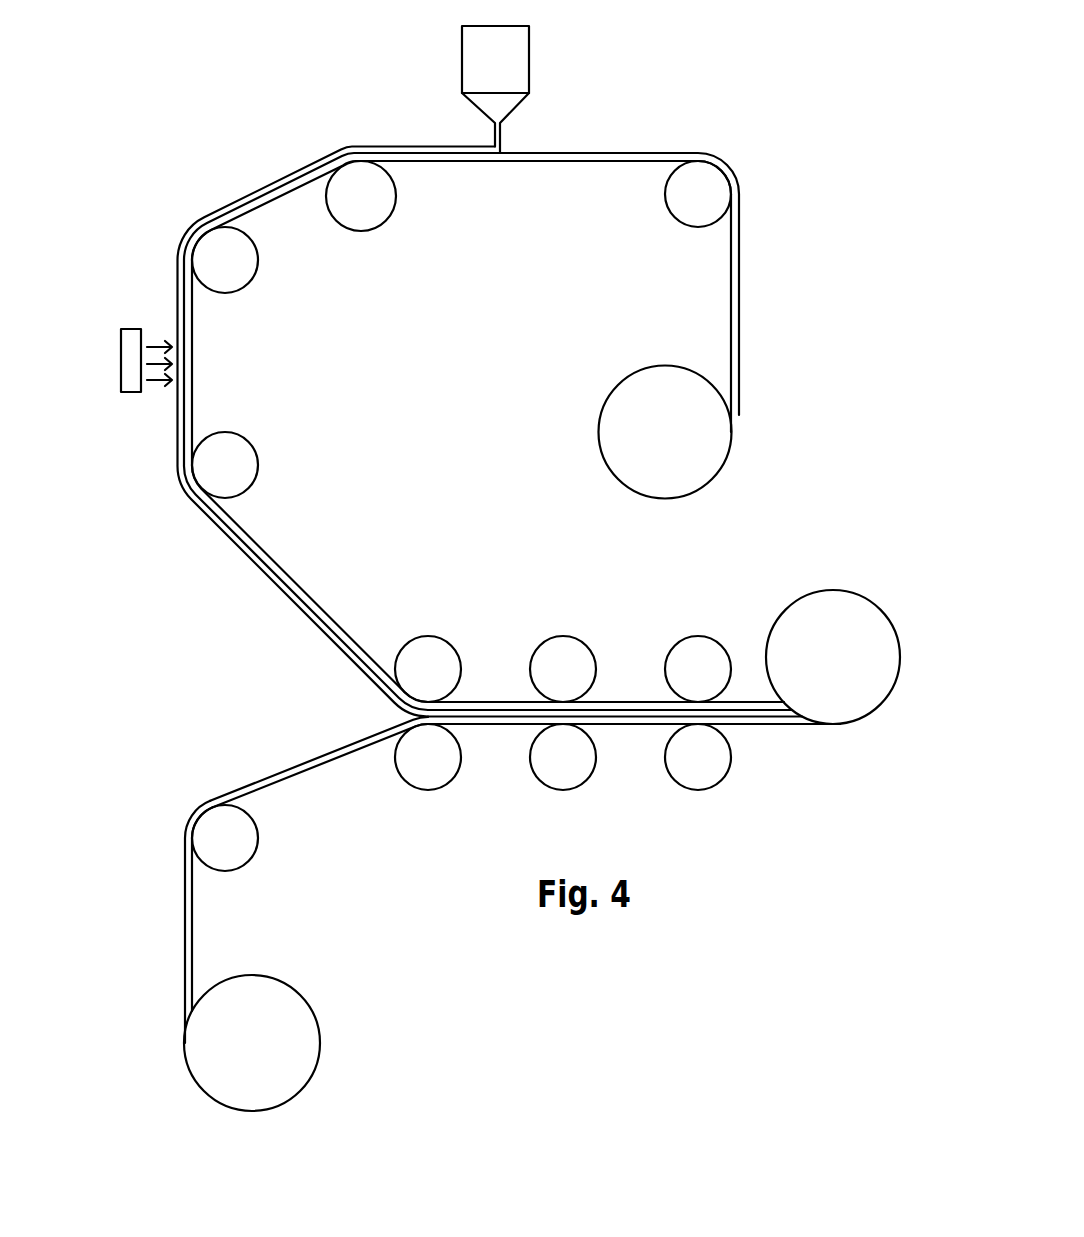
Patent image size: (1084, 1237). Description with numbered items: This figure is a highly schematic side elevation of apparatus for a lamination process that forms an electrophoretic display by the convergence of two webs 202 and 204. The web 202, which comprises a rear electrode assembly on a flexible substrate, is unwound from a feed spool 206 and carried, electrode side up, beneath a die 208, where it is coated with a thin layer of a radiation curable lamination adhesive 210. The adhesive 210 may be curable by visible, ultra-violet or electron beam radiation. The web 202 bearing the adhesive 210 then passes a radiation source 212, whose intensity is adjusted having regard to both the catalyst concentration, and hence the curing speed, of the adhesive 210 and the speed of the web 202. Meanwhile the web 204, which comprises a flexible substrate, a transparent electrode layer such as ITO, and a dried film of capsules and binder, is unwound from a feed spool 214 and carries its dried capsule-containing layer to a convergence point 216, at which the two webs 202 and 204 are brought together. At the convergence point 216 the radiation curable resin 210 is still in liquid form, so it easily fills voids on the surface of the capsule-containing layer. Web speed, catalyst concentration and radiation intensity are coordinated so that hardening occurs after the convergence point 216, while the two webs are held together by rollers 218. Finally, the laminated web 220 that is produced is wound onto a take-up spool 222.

The web 202 is at (732, 313).
The web 204 is at (187, 948).
The feed spool 206 is at (697, 448).
The die 208 is at (517, 68).
The radiation curable lamination adhesive 210 is at (418, 147).
The radiation source 212 is at (133, 342).
The feed spool 214 is at (277, 1058).
The convergence point 216 is at (405, 717).
The rollers 218 is at (697, 667).
The laminated web 220 is at (738, 720).
The take-up spool 222 is at (867, 675).